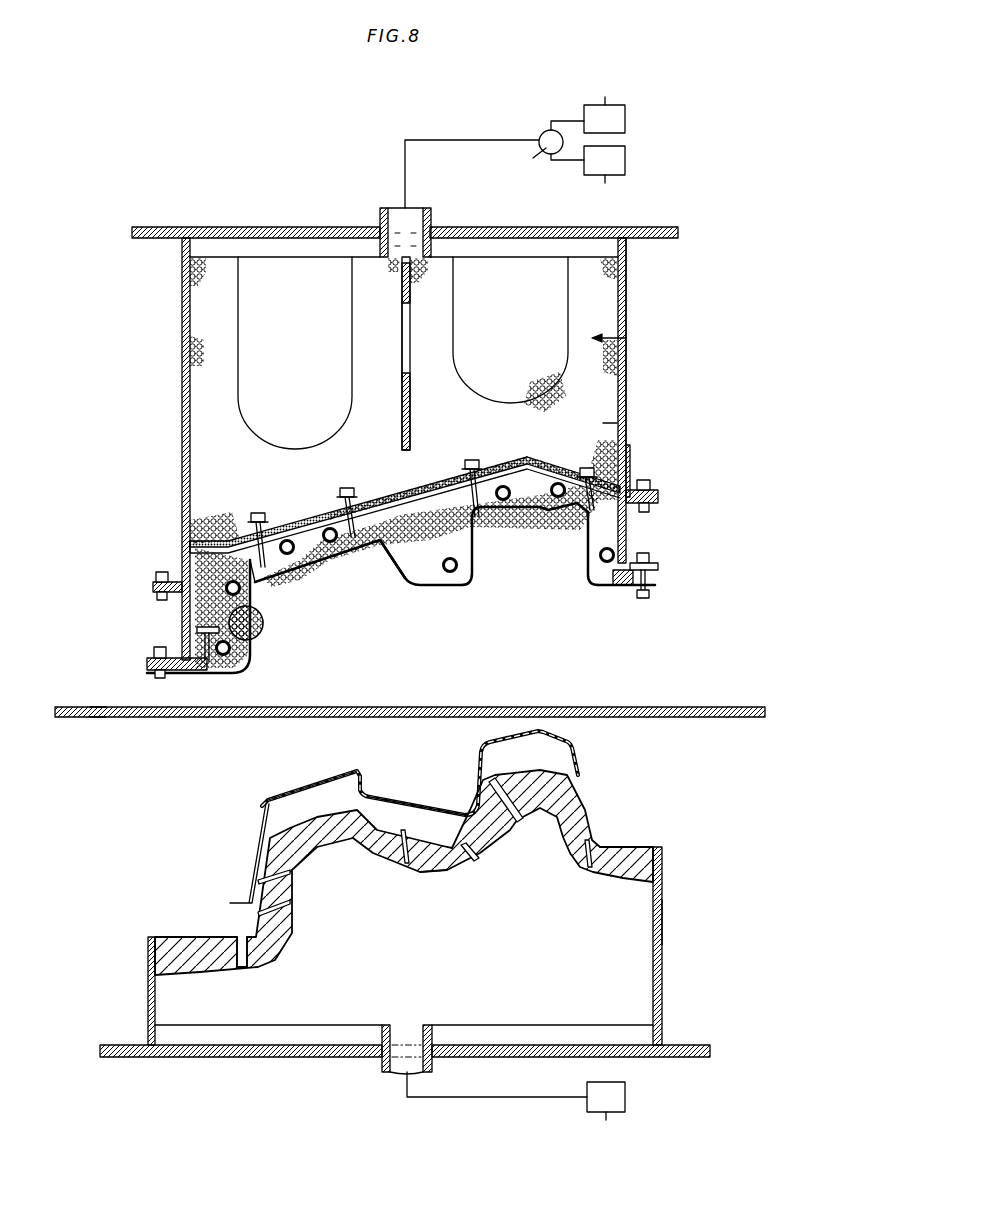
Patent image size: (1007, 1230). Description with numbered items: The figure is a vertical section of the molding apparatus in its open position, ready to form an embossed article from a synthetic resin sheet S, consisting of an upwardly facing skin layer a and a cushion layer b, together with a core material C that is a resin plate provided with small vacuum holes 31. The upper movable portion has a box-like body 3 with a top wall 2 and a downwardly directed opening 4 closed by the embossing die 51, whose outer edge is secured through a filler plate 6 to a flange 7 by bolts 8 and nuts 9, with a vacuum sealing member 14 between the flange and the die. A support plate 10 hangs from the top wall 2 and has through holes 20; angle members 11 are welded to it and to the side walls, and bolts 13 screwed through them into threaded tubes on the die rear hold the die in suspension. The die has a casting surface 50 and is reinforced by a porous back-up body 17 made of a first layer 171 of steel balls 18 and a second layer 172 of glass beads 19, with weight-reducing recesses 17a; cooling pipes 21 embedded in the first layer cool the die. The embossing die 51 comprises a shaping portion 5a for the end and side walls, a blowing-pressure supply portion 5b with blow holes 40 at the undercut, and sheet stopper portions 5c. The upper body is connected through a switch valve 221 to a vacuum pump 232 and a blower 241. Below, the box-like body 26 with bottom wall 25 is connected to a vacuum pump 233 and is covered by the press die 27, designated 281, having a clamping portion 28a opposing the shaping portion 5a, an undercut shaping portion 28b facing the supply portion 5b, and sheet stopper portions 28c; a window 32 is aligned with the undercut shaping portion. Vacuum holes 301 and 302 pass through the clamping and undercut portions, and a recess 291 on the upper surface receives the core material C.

The top wall 2 is at (262, 227).
The box-like body 3 is at (626, 373).
The downwardly directed opening 4 is at (632, 565).
The shaping portion 5a is at (395, 573).
The blowing-pressure supply portion 5b is at (264, 629).
The sheet stopper portion 5c is at (192, 675).
The filler plate 6 is at (653, 582).
The flange 7 is at (659, 573).
The bolt 8 is at (643, 599).
The nut 9 is at (650, 565).
The support plate 10 is at (410, 403).
The angle member 11 is at (630, 301).
The bolt 13 is at (260, 513).
The vacuum sealing member 14 is at (612, 588).
The porous back-up body 17 is at (626, 340).
The recess 17a is at (238, 343).
The first layer 171 is at (603, 532).
The second layer 172 is at (605, 423).
The steel ball 18 is at (417, 586).
The glass bead 19 is at (380, 490).
The through hole 20 is at (410, 347).
The cooling pipe 21 is at (294, 547).
The switch valve 221 is at (548, 134).
The vacuum pump 232 is at (625, 121).
The vacuum pump 233 is at (625, 1098).
The blower 241 is at (625, 160).
The bottom wall 25 is at (523, 1057).
The box-like body 26 is at (662, 944).
The press die 27 is at (657, 847).
The clamping portion 28a is at (430, 853).
The undercut shaping portion 28b is at (262, 914).
The sheet stopper portion 28c is at (180, 940).
The press die 281 is at (440, 873).
The recess 291 is at (398, 834).
The vacuum hole 301 is at (397, 867).
The vacuum hole 302 is at (289, 897).
The vacuum hole 31 is at (267, 799).
The window 32 is at (256, 850).
The blow hole 40 is at (264, 613).
The casting surface 50 is at (450, 588).
The embossing die 51 is at (512, 517).
The synthetic resin sheet S is at (708, 707).
The core material C is at (579, 757).
The skin layer a is at (98, 707).
The cushion layer b is at (98, 717).